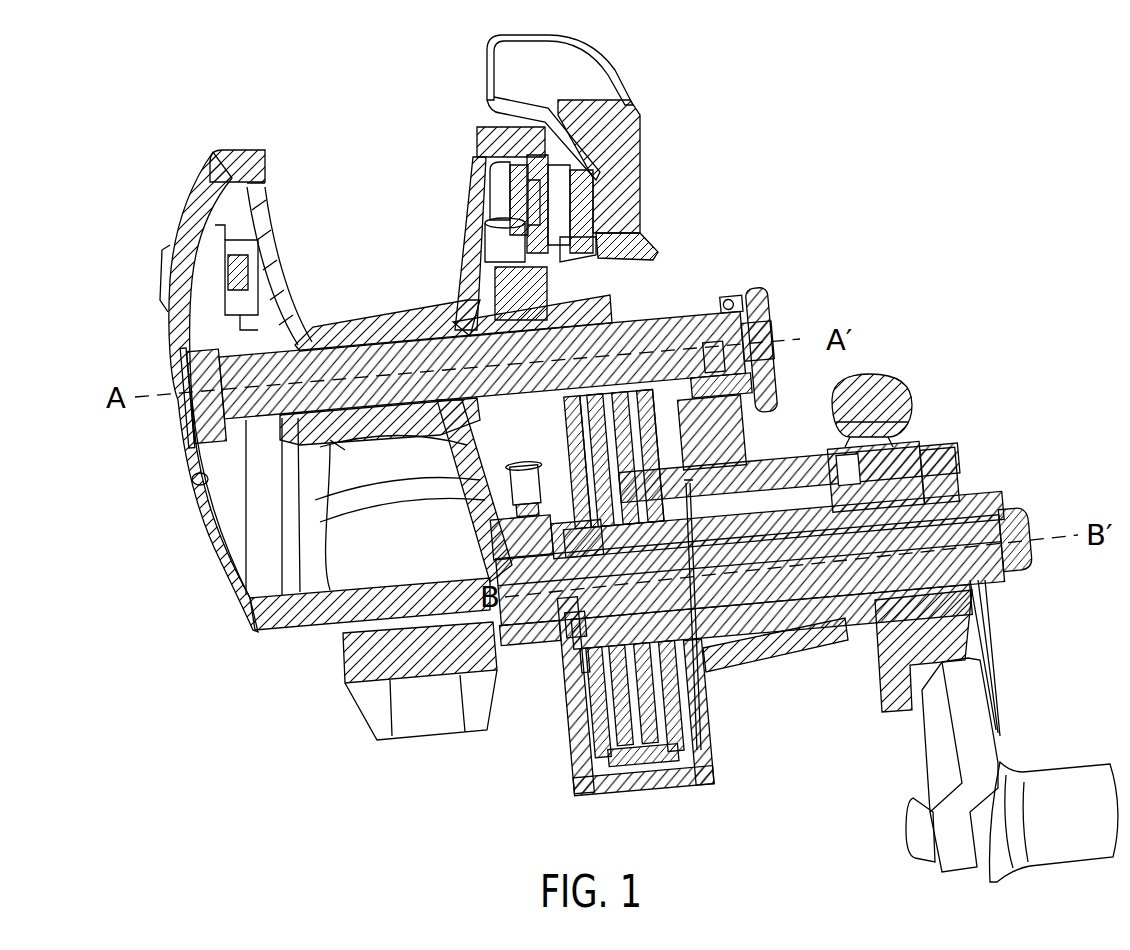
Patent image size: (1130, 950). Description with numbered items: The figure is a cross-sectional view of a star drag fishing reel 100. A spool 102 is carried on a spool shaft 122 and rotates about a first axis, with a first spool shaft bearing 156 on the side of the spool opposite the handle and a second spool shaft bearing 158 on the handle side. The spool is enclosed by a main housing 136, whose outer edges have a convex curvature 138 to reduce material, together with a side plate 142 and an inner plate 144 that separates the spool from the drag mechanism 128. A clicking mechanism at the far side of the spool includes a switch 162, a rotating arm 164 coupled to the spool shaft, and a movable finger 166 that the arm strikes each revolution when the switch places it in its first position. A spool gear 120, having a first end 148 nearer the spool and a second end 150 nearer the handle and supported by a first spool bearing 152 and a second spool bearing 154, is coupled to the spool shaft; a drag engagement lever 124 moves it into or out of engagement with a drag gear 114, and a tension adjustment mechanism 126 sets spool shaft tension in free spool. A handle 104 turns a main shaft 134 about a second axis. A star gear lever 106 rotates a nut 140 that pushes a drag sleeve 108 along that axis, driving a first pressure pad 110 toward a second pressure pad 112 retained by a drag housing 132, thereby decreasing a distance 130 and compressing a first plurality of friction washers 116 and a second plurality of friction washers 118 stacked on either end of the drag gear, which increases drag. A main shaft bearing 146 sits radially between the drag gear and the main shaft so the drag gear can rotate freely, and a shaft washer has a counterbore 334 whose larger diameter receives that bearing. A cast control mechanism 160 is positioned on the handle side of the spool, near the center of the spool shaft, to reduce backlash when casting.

The fishing reel 100 is at (103, 116).
The spool 102 is at (376, 314).
The handle 104 is at (1002, 733).
The star gear lever 106 is at (885, 395).
The drag sleeve 108 is at (778, 666).
The first pressure pad 110 is at (730, 660).
The second pressure pad 112 is at (582, 652).
The drag gear 114 is at (647, 767).
The first plurality of friction washers 116 is at (603, 742).
The second plurality of friction washers 118 is at (690, 742).
The spool gear 120 is at (615, 330).
The spool shaft 122 is at (302, 320).
The drag engagement lever 124 is at (580, 80).
The tension adjustment mechanism 126 is at (775, 318).
The drag mechanism 128 is at (586, 683).
The distance 130 is at (687, 483).
The drag housing 132 is at (567, 747).
The main shaft 134 is at (963, 517).
The main housing 136 is at (207, 555).
The curvature 138 is at (195, 473).
The nut 140 is at (850, 643).
The side plate 142 is at (645, 255).
The inner plate 144 is at (480, 130).
The main shaft bearing 146 is at (593, 528).
The first end 148 is at (476, 305).
The second end 150 is at (732, 303).
The first spool bearing 152 is at (608, 237).
The second spool bearing 154 is at (700, 383).
The first spool shaft bearing 156 is at (195, 425).
The second spool shaft bearing 158 is at (493, 317).
The cast control mechanism 160 is at (511, 486).
The switch 162 is at (163, 262).
The rotating arm 164 is at (200, 318).
The movable finger 166 is at (233, 190).
The counterbore 334 is at (580, 618).